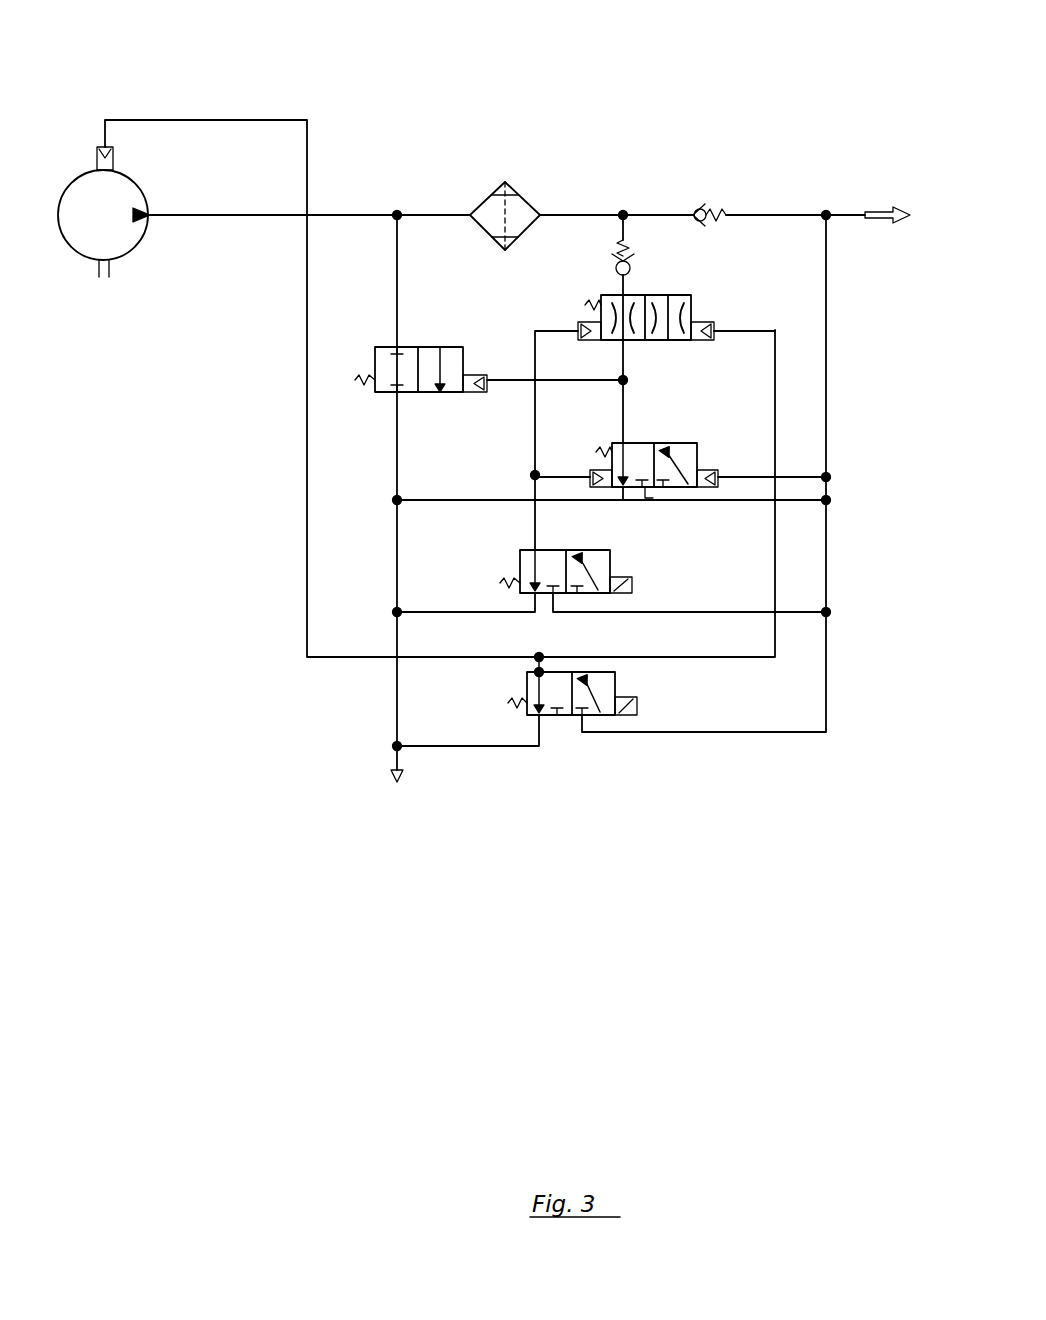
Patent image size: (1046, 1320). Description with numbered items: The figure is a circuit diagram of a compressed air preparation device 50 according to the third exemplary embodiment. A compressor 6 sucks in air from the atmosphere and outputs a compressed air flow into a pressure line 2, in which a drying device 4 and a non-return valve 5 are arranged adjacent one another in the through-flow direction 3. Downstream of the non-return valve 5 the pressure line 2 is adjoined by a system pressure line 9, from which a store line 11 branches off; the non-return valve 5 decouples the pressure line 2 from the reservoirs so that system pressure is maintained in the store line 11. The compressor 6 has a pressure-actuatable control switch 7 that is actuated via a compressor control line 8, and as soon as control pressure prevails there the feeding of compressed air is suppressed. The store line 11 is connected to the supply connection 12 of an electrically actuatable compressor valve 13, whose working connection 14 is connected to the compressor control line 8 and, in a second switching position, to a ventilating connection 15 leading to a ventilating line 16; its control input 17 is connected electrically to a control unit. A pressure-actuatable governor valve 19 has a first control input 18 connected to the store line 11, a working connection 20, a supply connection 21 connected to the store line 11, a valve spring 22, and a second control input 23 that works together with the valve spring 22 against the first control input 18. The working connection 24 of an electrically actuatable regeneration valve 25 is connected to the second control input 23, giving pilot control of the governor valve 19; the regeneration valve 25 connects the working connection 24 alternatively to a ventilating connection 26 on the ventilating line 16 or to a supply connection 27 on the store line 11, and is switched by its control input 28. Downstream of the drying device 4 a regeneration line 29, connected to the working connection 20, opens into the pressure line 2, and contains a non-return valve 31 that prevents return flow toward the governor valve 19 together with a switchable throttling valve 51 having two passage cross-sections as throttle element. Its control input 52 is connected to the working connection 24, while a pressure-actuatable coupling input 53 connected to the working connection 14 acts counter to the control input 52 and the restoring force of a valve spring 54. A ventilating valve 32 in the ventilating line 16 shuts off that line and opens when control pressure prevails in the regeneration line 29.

The pressure line 2 is at (345, 213).
The through-flow direction 3 is at (887, 207).
The drying device 4 is at (485, 202).
The non-return valve 5 is at (697, 212).
The compressor 6 is at (92, 207).
The control switch 7 is at (104, 147).
The compressor control line 8 is at (185, 120).
The system pressure line 9 is at (790, 214).
The store line 11 is at (826, 448).
The supply connection 12 is at (587, 718).
The compressor valve 13 is at (552, 698).
The working connection 14 is at (535, 662).
The ventilating connection 15 is at (536, 720).
The ventilating line 16 is at (385, 688).
The control input 17 is at (622, 712).
The first control input 18 is at (712, 468).
The governor valve 19 is at (672, 437).
The working connection 20 is at (630, 439).
The supply connection 21 is at (647, 492).
The valve spring 22 is at (599, 445).
The second control input 23 is at (592, 470).
The working connection 24 is at (530, 547).
The regeneration valve 25 is at (619, 552).
The ventilating connection 26 is at (530, 600).
The supply connection 27 is at (558, 598).
The control input 28 is at (618, 580).
The regeneration line 29 is at (628, 233).
The non-return valve 31 is at (632, 272).
The ventilating valve 32 is at (392, 367).
The compressed air preparation device 50 is at (266, 850).
The switchable throttling valve 51 is at (702, 298).
The control input 52 is at (712, 322).
The coupling input 53 is at (590, 328).
The valve spring 54 is at (587, 300).